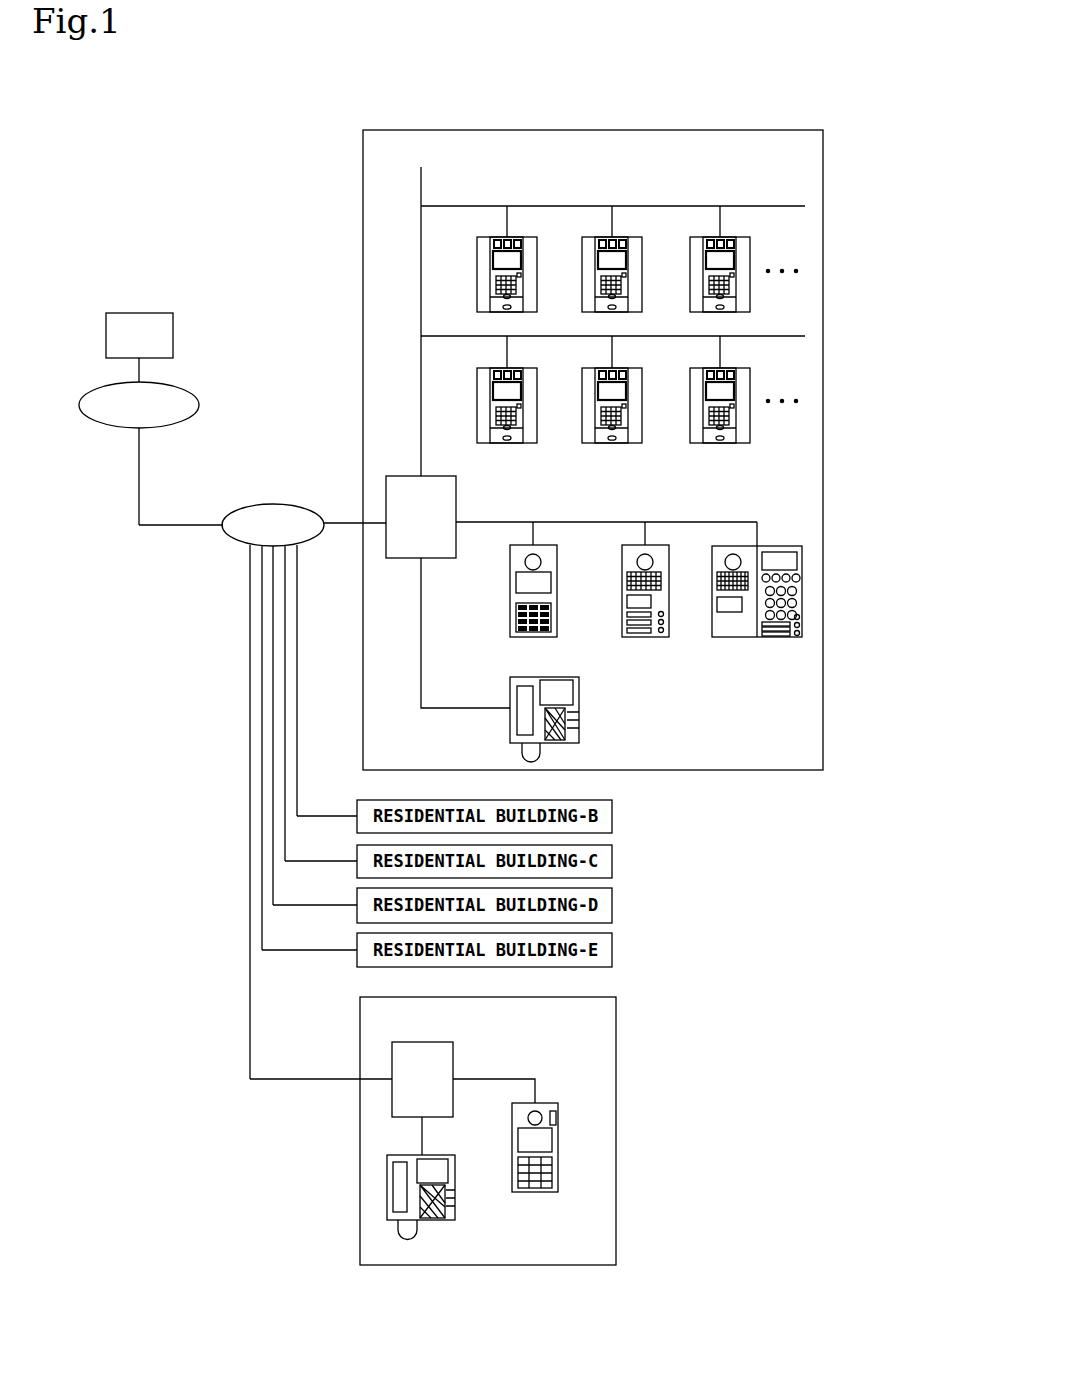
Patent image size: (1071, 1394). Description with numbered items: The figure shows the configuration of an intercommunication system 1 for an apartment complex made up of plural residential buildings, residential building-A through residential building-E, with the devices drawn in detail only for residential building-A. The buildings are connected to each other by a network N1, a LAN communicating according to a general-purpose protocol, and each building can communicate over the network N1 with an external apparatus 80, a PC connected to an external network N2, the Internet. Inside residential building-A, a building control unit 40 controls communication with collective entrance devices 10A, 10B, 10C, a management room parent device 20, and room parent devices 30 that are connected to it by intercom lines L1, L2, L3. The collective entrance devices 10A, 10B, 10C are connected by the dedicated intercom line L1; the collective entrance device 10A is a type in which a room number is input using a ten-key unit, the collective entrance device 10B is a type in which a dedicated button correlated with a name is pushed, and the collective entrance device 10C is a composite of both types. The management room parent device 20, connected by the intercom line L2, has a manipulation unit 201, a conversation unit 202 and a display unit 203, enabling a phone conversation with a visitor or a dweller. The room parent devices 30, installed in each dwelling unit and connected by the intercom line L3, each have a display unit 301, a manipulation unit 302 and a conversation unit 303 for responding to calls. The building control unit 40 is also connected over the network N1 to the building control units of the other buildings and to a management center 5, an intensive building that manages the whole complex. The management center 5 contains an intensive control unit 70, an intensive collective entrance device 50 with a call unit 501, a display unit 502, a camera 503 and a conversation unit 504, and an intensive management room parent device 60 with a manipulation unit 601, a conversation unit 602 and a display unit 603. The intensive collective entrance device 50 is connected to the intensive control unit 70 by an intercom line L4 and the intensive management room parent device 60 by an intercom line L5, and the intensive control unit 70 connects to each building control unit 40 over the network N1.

The intercommunication system 1 is at (878, 272).
The external apparatus 80 is at (173, 334).
The external network N2 is at (176, 384).
The network N1 is at (265, 505).
The building control unit 40 is at (386, 496).
The intercom line L3 is at (421, 416).
The intercom line L1 is at (497, 522).
The intercom line L2 is at (421, 605).
The room parent device 30 is at (613, 337).
The display unit 301 is at (492, 378).
The manipulation unit 302 is at (515, 392).
The conversation unit 303 is at (518, 414).
The collective entrance device 10A is at (545, 548).
The collective entrance device 10B is at (656, 545).
The collective entrance device 10C is at (777, 546).
The management room parent device 20 is at (551, 701).
The manipulation unit 201 is at (567, 718).
The conversation unit 202 is at (516, 721).
The display unit 203 is at (558, 690).
The management center 5 is at (616, 1040).
The intensive control unit 70 is at (392, 1060).
The intercom line L4 is at (500, 1079).
The intercom line L5 is at (422, 1133).
The intensive collective entrance device 50 is at (575, 1132).
The call unit 501 is at (556, 1170).
The display unit 502 is at (548, 1140).
The camera 503 is at (528, 1118).
The conversation unit 504 is at (558, 1118).
The intensive management room parent device 60 is at (436, 1184).
The manipulation unit 601 is at (455, 1200).
The conversation unit 602 is at (400, 1175).
The display unit 603 is at (440, 1172).